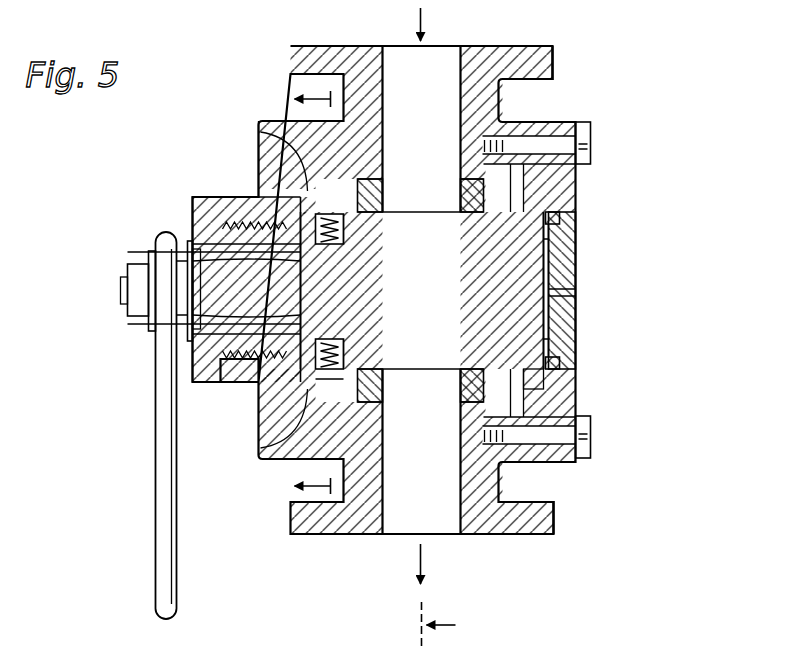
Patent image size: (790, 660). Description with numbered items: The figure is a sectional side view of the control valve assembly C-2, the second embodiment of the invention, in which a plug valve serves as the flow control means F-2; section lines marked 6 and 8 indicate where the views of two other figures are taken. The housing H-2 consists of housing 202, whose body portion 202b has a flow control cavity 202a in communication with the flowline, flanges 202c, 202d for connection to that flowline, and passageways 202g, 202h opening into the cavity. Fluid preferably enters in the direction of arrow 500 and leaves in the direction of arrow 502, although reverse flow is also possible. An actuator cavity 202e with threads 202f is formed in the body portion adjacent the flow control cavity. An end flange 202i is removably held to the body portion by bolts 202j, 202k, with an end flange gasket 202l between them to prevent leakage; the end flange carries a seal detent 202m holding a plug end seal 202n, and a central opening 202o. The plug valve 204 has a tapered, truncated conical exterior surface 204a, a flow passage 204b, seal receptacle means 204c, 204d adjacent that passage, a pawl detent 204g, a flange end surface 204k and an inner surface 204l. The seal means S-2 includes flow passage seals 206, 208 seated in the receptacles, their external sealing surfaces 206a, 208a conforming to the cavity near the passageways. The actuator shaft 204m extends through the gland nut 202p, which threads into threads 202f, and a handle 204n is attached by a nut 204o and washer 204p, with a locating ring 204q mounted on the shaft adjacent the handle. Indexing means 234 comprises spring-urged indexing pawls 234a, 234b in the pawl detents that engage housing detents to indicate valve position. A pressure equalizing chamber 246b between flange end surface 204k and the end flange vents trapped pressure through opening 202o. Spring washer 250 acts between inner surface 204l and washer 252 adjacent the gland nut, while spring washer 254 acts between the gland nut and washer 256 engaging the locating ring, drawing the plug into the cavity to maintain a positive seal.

The housing 202 is at (481, 44).
The flow control cavity 202a is at (300, 152).
The body portion 202b is at (262, 130).
The flange 202c is at (554, 57).
The flange 202d is at (555, 525).
The actuator cavity 202e is at (295, 176).
The threads 202f is at (256, 196).
The passageway 202g is at (445, 83).
The passageway 202h is at (445, 508).
The end flange 202i is at (578, 257).
The bolt 202j is at (591, 133).
The bolt 202k is at (591, 429).
The end flange gasket 202l is at (535, 382).
The seal detent 202m is at (560, 218).
The plug end seal 202n is at (560, 362).
The opening 202o is at (555, 293).
The gland nut 202p is at (200, 358).
The plug valve 204 is at (530, 335).
The exterior surface 204a is at (320, 398).
The flow passage 204b is at (450, 270).
The seal receptacle means 204c is at (380, 210).
The seal receptacle means 204d is at (393, 405).
The pawl detent 204g is at (205, 310).
The flange end surface 204k is at (565, 305).
The inner surface 204l is at (310, 362).
The actuator shaft 204m is at (235, 200).
The handle 204n is at (157, 572).
The nut 204o is at (135, 276).
The washer 204p is at (150, 262).
The locating ring 204q is at (205, 300).
The flow passage seal 206 is at (394, 214).
The external sealing surface 206a is at (468, 178).
The flow passage seal 208 is at (394, 378).
The external sealing surface 208a is at (466, 418).
The indexing means 234 is at (328, 380).
The indexing pawl 234a is at (328, 214).
The indexing pawl 234b is at (340, 374).
The pressure equalizing chamber 246b is at (552, 275).
The spring washer 250 is at (300, 257).
The washer 252 is at (300, 290).
The spring washer 254 is at (212, 280).
The washer 256 is at (212, 305).
The arrow 500 is at (418, 12).
The arrow 502 is at (418, 560).
The control valve assembly C-2 is at (168, 44).
The housing H-2 is at (301, 44).
The flow control means F-2 is at (549, 240).
The seal means S-2 is at (489, 401).
The section line 6 is at (292, 295).
The section line 8 is at (450, 625).